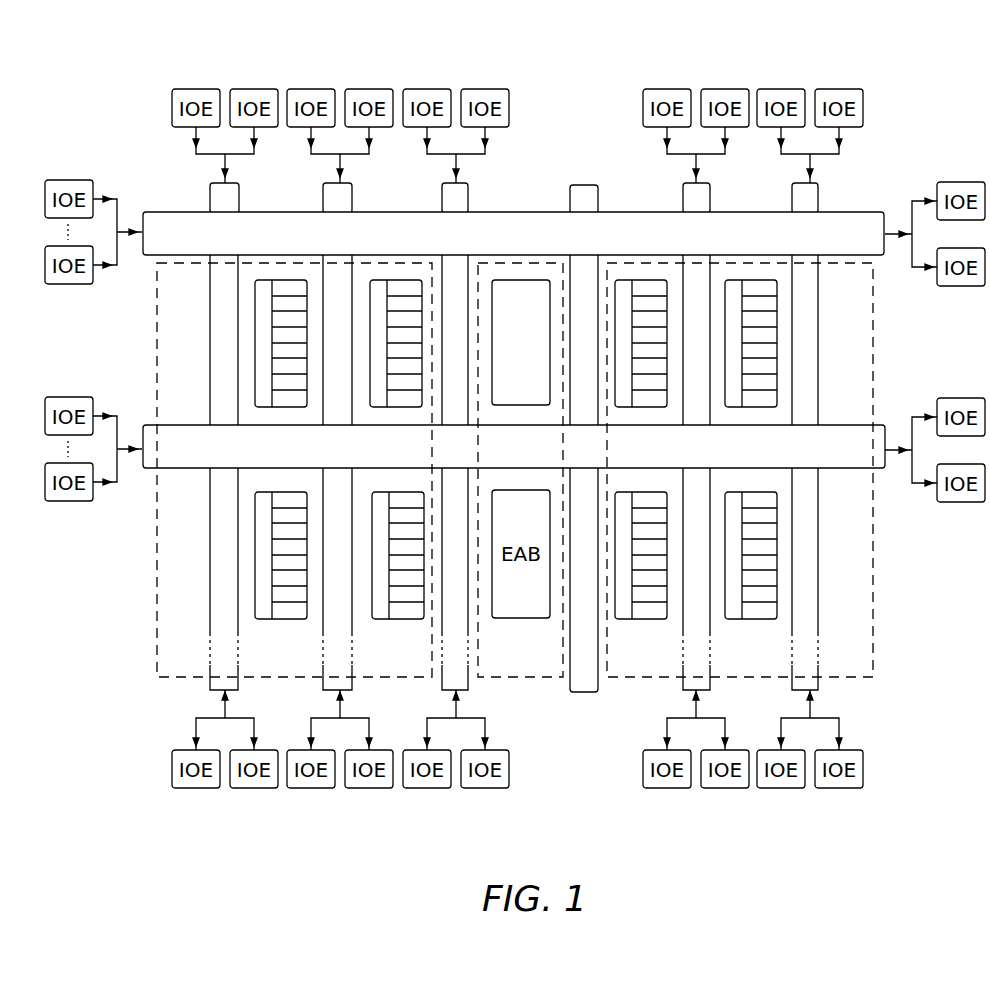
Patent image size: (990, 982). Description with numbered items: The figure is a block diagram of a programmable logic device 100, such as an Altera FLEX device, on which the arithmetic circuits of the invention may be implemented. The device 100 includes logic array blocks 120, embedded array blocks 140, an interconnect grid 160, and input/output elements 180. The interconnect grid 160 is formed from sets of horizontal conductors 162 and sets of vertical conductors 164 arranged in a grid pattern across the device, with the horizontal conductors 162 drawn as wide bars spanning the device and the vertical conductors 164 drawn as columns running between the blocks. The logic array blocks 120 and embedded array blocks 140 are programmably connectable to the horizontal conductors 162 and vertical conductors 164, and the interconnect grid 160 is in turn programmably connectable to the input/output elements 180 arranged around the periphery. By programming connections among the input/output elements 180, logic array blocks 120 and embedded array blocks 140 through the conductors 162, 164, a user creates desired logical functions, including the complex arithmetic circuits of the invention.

The programmable logic device 100 is at (960, 51).
The logic array blocks 120 is at (754, 619).
The embedded array blocks 140 is at (508, 278).
The interconnect grid 160 is at (813, 238).
The horizontal conductors 162 is at (152, 257).
The vertical conductors 164 is at (237, 200).
The input/output elements 180 is at (860, 766).